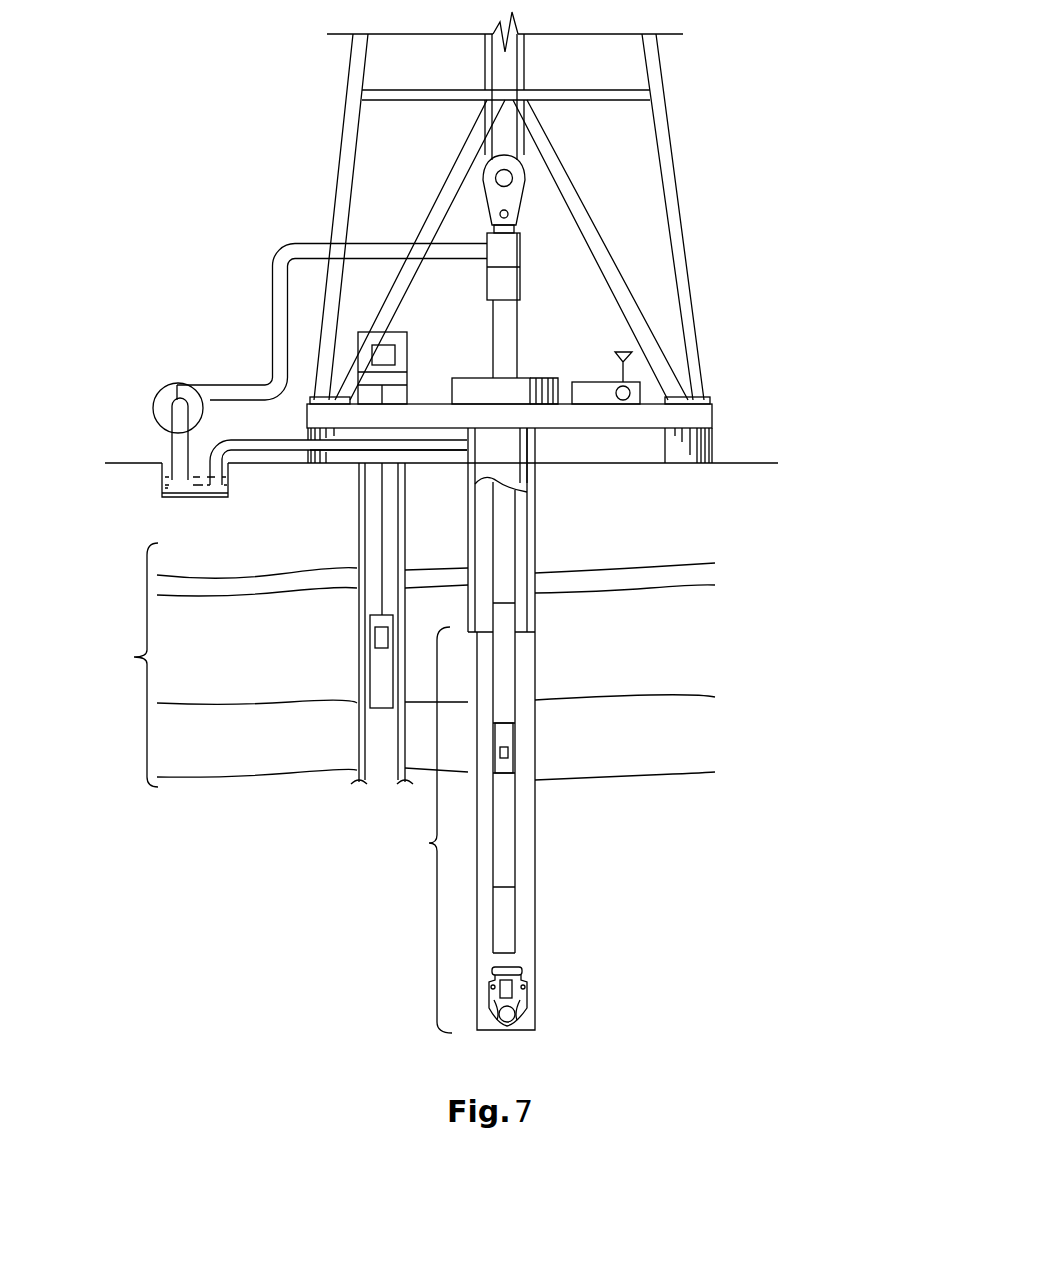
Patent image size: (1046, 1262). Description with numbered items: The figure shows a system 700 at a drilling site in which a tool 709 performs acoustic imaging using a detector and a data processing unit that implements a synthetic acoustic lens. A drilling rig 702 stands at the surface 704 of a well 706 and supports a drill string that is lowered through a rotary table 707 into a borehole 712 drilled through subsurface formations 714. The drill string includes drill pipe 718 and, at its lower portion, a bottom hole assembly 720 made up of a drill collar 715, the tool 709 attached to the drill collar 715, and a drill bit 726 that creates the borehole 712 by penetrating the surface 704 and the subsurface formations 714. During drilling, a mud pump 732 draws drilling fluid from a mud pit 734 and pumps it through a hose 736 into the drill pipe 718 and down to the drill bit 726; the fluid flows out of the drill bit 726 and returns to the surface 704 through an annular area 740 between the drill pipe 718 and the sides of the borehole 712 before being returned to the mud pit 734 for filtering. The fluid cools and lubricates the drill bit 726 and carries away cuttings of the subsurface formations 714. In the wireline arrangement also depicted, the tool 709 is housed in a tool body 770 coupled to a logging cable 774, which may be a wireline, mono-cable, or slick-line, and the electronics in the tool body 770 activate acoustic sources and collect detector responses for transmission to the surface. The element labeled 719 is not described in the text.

The system 700 is at (290, 103).
The drilling rig 702 is at (680, 187).
The surface 704 is at (730, 463).
The well 706 is at (537, 458).
The rotary table 707 is at (470, 378).
The tool 709 is at (378, 637).
The borehole 712 is at (360, 563).
The subsurface formations 714 is at (114, 665).
The drill collar 715 is at (508, 732).
The drill pipe 718 is at (535, 638).
The drill string 719 is at (518, 518).
The bottom hole assembly 720 is at (408, 830).
The drill bit 726 is at (527, 993).
The mud pump 732 is at (187, 383).
The mud pit 734 is at (168, 470).
The hose 736 is at (273, 330).
The annular area 740 is at (532, 678).
The tool body 770 is at (370, 670).
The logging cable 774 is at (382, 522).